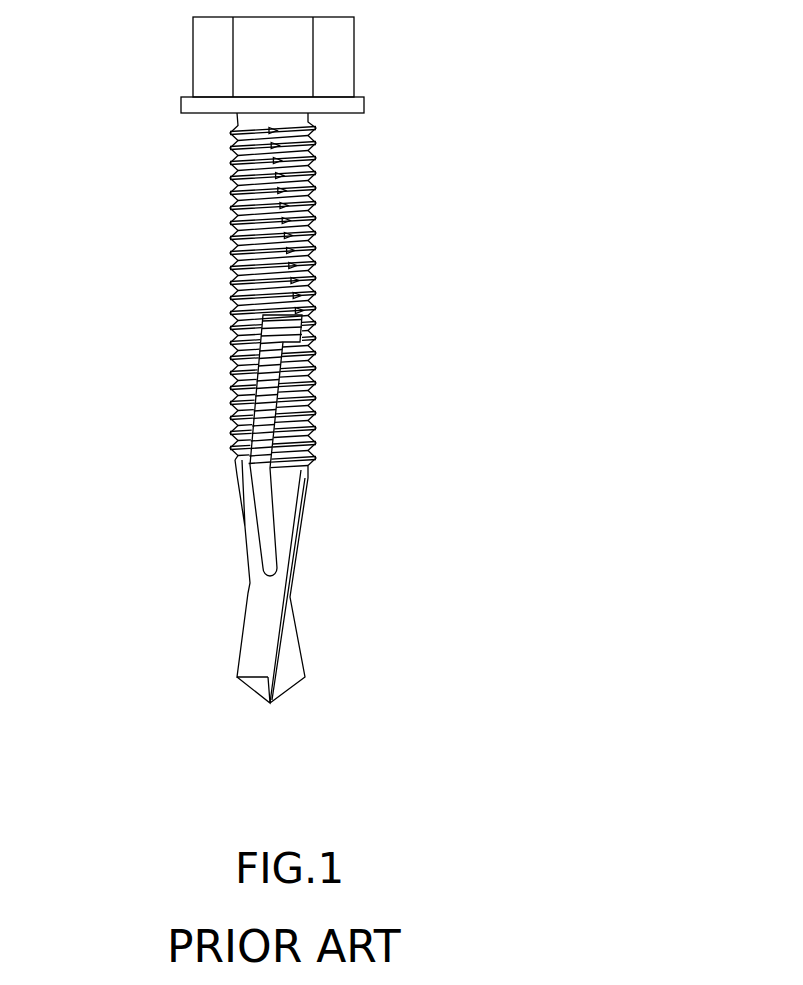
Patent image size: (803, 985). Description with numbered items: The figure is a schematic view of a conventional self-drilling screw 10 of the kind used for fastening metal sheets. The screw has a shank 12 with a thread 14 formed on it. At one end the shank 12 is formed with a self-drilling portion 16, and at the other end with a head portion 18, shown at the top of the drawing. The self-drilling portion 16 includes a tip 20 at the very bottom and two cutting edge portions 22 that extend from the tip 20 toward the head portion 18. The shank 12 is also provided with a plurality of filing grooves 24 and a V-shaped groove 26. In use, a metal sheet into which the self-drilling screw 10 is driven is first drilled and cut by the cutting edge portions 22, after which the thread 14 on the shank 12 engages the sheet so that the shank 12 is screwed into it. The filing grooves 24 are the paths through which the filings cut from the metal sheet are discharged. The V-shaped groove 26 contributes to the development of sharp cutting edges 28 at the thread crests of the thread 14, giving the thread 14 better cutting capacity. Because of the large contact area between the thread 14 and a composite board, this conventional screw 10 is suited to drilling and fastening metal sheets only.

The self-drilling screw 10 is at (245, 402).
The shank 12 is at (316, 290).
The thread 14 is at (230, 205).
The self-drilling portion 16 is at (258, 627).
The head portion 18 is at (338, 42).
The tip 20 is at (270, 705).
The cutting edge portions 22 is at (290, 645).
The filing grooves 24 is at (290, 410).
The V-shaped groove 26 is at (315, 185).
The sharp cutting edges 28 is at (285, 158).